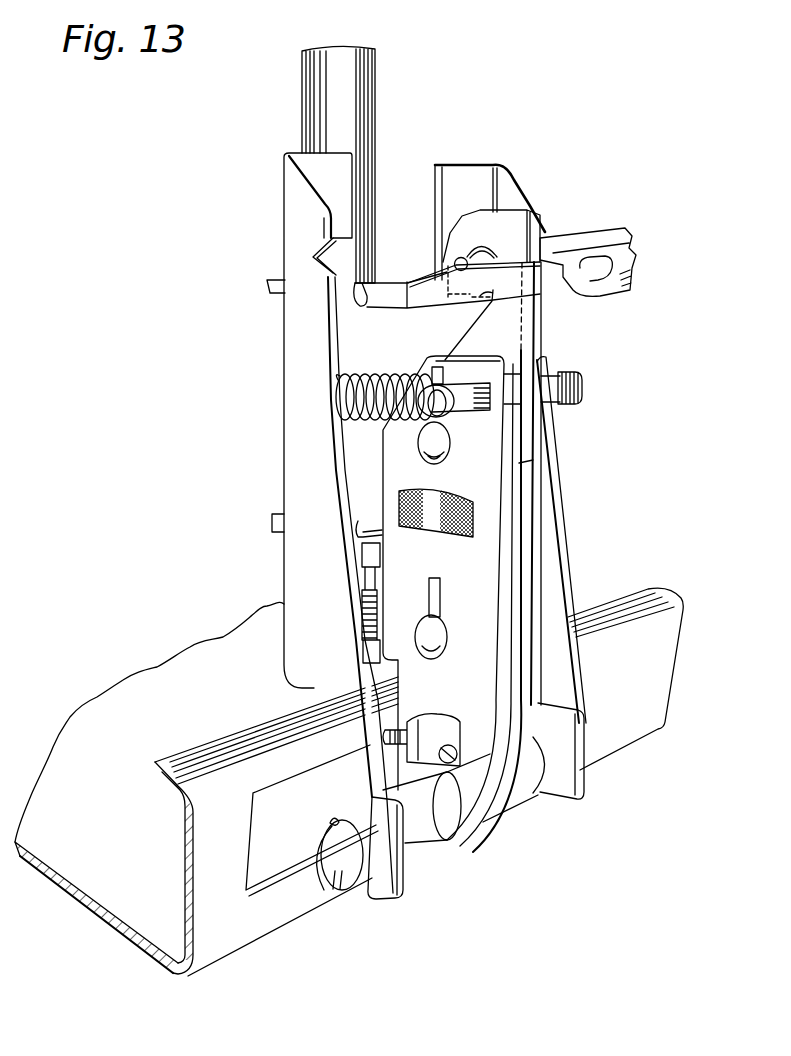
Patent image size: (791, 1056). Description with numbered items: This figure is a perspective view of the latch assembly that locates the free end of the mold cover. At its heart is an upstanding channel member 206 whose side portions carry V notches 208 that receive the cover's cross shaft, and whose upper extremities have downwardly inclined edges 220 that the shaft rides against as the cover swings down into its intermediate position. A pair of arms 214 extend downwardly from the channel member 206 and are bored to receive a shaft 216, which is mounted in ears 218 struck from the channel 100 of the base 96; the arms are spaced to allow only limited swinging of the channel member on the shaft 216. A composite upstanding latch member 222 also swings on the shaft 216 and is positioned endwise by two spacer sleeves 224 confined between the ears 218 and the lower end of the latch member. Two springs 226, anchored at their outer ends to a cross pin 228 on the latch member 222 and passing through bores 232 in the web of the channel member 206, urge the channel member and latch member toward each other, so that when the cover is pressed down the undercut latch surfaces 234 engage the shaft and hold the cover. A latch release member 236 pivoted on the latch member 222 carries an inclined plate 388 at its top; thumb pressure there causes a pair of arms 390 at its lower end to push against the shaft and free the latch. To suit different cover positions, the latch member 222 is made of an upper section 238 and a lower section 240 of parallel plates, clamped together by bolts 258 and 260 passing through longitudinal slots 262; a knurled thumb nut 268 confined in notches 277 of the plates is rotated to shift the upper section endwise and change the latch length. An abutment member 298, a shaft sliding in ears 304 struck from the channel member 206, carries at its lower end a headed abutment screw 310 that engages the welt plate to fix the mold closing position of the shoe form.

The base 96 is at (41, 862).
The channel 100 is at (182, 855).
The channel member 206 is at (288, 464).
The V notches 208 is at (337, 240).
The arms 214 is at (348, 692).
The shaft 216 is at (328, 890).
The ears 218 is at (388, 886).
The downwardly inclined edges 220 is at (309, 172).
The latch member 222 is at (578, 508).
The spacer members or sleeves 224 is at (443, 820).
The springs 226 is at (574, 406).
The cross pin 228 is at (448, 412).
The bores 232 is at (338, 383).
The undercut latch surfaces 234 is at (448, 301).
The latch release member 236 is at (498, 303).
The upper section 238 is at (507, 227).
The lower section 240 is at (507, 575).
The clamping bolt 258 is at (450, 452).
The clamping bolt 260 is at (450, 642).
The longitudinal slots 262 is at (446, 378).
The knurled thumb nut 268 is at (432, 510).
The notches 277 is at (475, 517).
The abutment member 298 is at (373, 103).
The ears 304 is at (270, 289).
The headed abutment screw 310 is at (362, 610).
The inclined plate 388 is at (603, 230).
The arms 390 is at (413, 283).